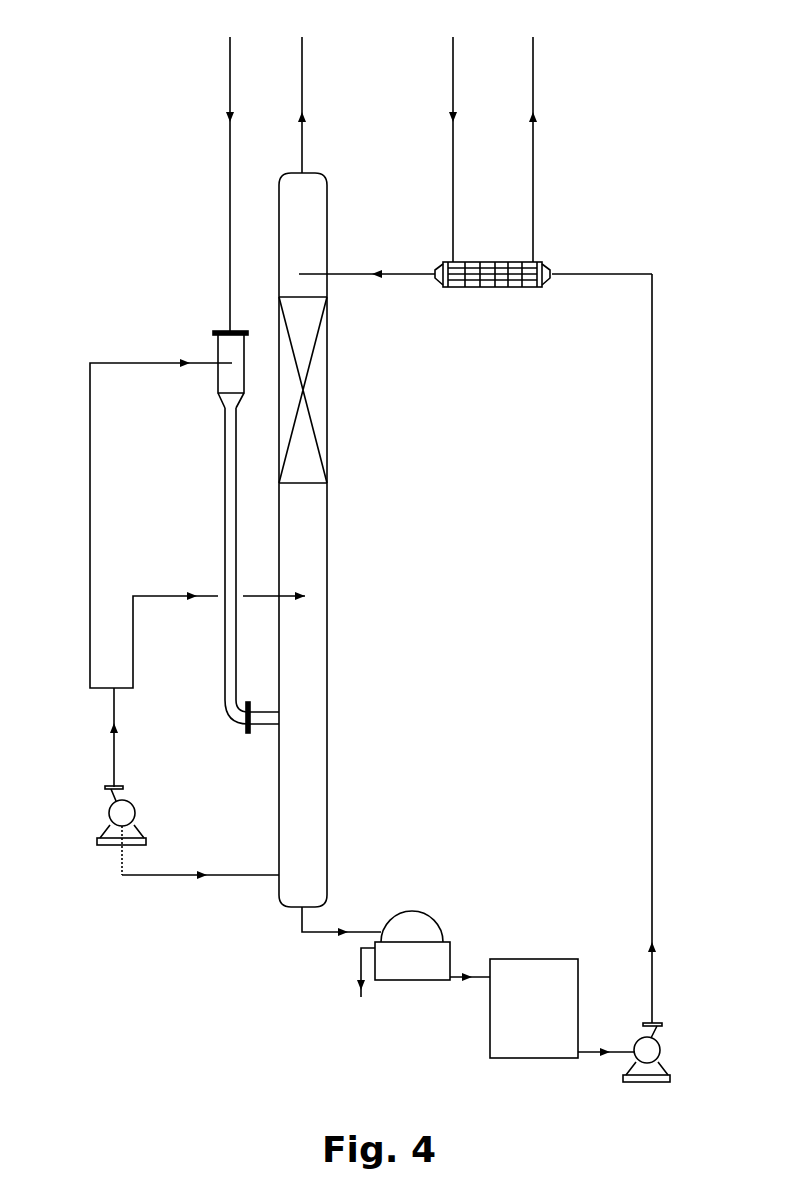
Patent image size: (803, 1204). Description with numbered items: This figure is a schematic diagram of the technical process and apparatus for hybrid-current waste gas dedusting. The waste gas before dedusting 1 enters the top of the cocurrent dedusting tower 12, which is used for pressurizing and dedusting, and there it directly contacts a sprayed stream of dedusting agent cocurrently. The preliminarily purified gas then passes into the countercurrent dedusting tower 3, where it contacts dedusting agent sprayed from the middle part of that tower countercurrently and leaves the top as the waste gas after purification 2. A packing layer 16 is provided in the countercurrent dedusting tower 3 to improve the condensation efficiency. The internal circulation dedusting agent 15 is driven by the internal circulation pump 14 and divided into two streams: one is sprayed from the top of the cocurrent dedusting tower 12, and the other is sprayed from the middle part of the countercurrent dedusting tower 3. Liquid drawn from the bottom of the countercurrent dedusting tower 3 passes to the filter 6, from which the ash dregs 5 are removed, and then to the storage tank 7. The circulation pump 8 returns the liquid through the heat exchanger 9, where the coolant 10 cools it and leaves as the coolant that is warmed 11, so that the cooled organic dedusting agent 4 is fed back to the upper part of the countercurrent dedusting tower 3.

The waste gas before dedusting 1 is at (222, 182).
The waste gas after purification 2 is at (311, 103).
The countercurrent dedusting tower 3 is at (318, 572).
The organic dedusting agent 4 is at (477, 628).
The ash dregs 5 is at (355, 976).
The filter 6 is at (417, 913).
The storage tank 7 is at (534, 959).
The circulation pump 8 is at (660, 1023).
The heat exchanger 9 is at (542, 263).
The coolant 10 is at (438, 148).
The coolant that is warmed 11 is at (549, 148).
The cocurrent dedusting tower 12 is at (232, 582).
The internal circulation pump 14 is at (107, 787).
The internal circulation dedusting agent 15 is at (197, 556).
The packing layer 16 is at (318, 422).